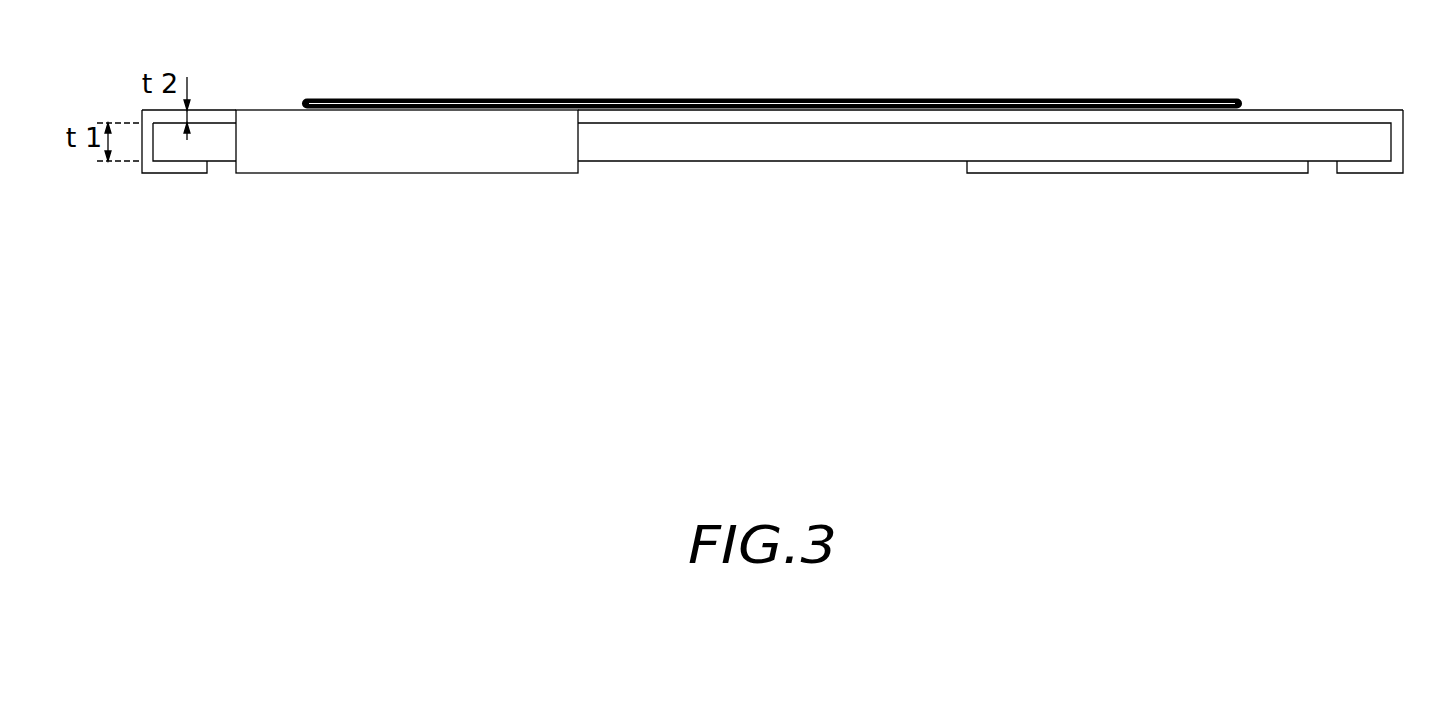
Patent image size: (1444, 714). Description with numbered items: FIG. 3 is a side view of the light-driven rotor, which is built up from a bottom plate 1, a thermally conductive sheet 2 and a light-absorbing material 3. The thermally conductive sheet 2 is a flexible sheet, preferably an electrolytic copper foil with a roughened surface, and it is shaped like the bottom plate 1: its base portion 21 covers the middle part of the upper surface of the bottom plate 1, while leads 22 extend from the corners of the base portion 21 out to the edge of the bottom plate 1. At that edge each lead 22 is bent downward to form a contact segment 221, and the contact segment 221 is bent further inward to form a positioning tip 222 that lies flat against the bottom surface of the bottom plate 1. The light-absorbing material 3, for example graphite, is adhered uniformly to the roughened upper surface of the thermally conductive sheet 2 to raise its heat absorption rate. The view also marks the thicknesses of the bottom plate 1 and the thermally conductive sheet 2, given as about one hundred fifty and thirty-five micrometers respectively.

The bottom plate 1 is at (790, 153).
The thermally conductive sheet 2 is at (233, 109).
The light-absorbing material 3 is at (870, 98).
The base portion 21 is at (1258, 108).
The lead 22 is at (1348, 118).
The contact segment 221 is at (1395, 140).
The positioning tip 222 is at (1348, 168).